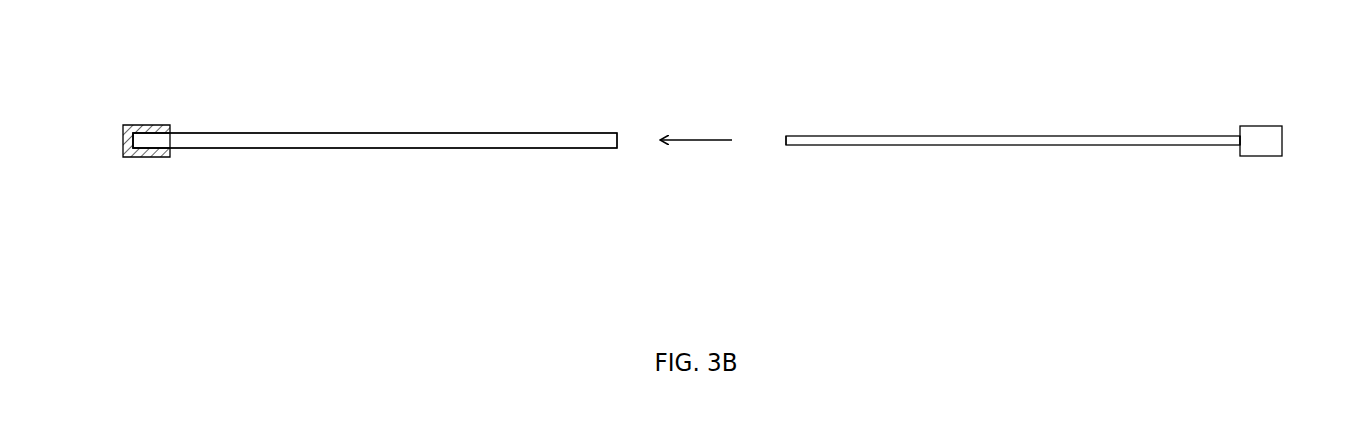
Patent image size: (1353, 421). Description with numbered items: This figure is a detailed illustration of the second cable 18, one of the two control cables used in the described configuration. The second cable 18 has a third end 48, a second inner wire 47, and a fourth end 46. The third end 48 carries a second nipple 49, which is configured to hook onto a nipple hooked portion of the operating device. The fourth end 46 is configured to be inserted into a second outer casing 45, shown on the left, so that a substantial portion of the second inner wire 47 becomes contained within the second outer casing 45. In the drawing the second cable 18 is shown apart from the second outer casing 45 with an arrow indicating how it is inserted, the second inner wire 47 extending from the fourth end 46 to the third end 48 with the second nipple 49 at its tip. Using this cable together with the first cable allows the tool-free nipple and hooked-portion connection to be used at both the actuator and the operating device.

The second cable 18 is at (118, 91).
The second outer casing 45 is at (375, 195).
The fourth end 46 is at (793, 168).
The second inner wire 47 is at (1022, 158).
The third end 48 is at (1218, 168).
The second nipple 49 is at (1259, 168).